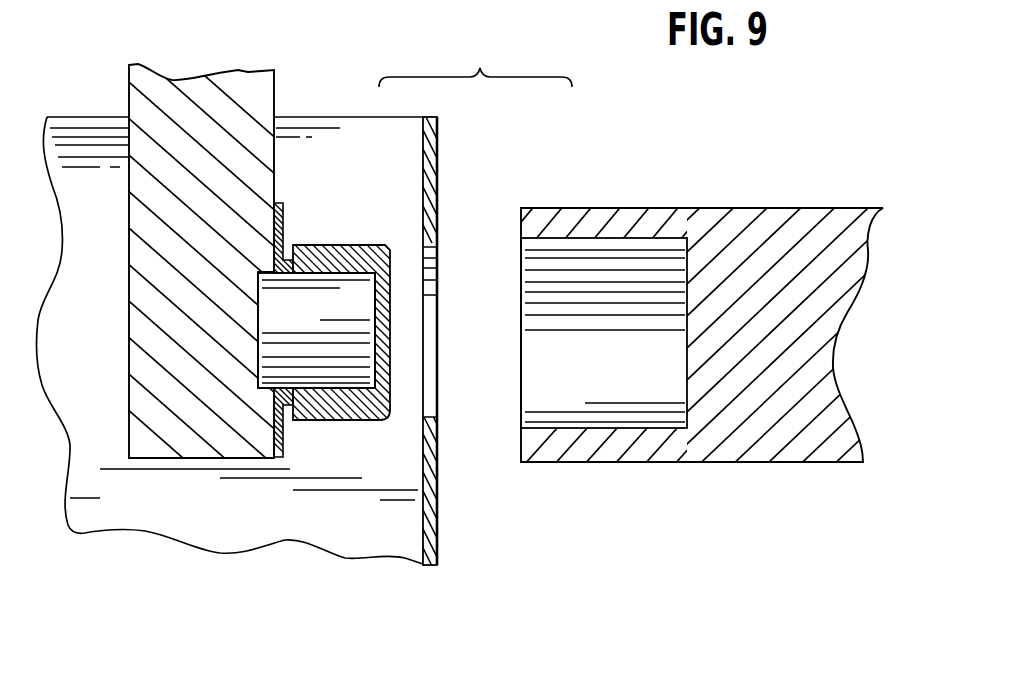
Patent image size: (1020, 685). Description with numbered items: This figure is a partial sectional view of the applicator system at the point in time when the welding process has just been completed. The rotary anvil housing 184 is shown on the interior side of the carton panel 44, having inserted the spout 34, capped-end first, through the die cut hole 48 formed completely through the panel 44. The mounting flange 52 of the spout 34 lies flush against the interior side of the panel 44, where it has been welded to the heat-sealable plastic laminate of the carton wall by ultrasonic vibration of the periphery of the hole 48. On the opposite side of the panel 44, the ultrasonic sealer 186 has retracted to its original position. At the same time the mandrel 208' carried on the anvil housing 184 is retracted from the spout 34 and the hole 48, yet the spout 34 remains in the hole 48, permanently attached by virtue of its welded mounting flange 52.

The rotary anvil housing 184 is at (129, 98).
The ultrasonic sealer 186 is at (643, 208).
The mounting flange 52 is at (283, 226).
The panel 44 is at (437, 178).
The die cut hole 48 is at (437, 383).
The spout 34 is at (388, 420).
The hub 208' is at (291, 441).